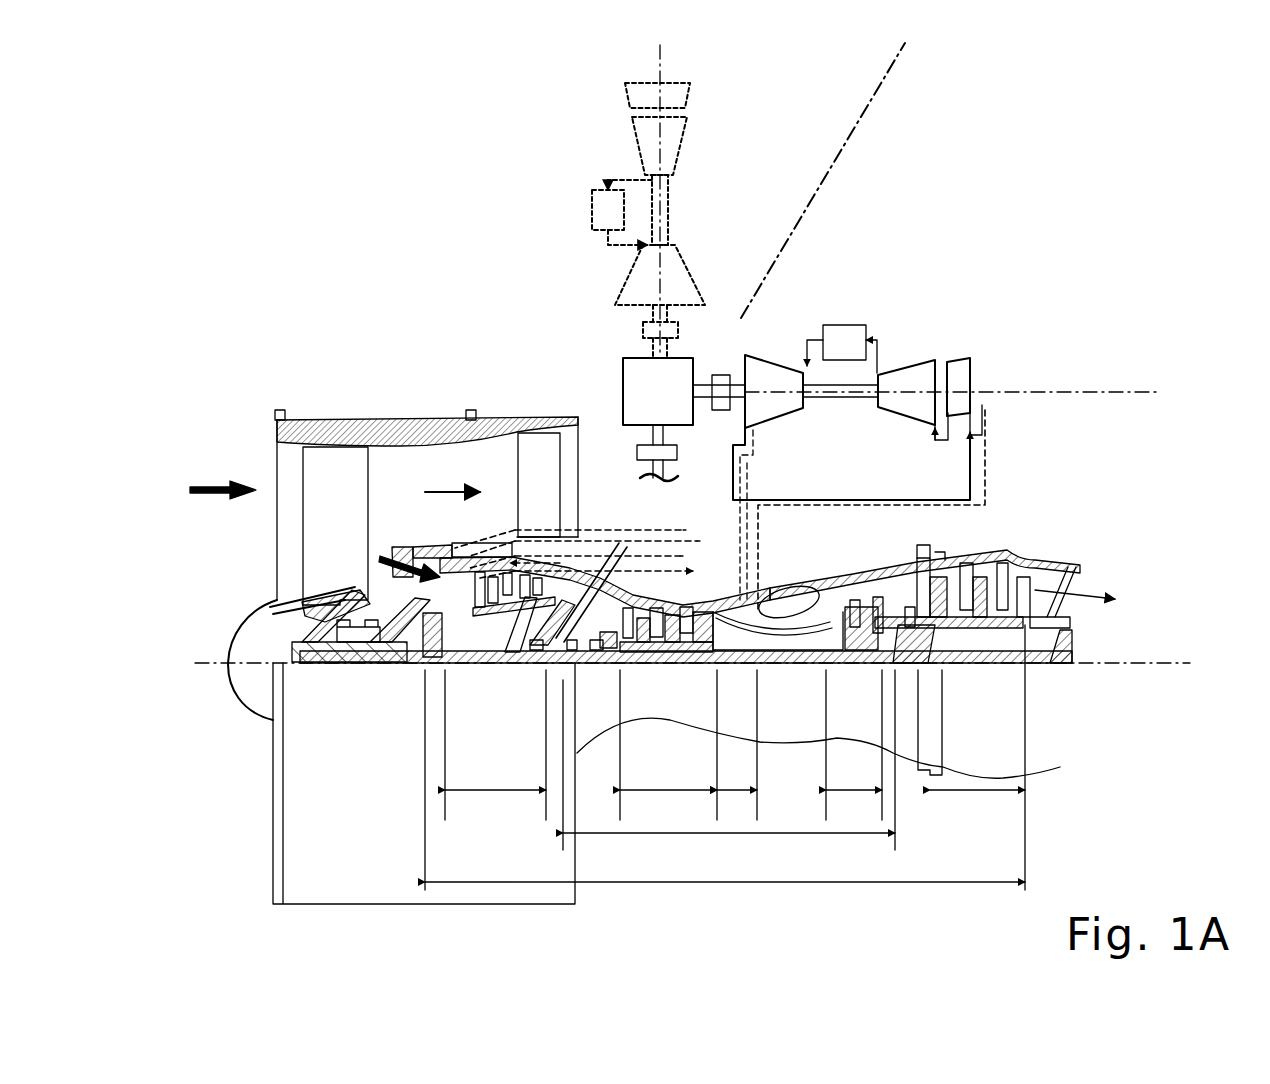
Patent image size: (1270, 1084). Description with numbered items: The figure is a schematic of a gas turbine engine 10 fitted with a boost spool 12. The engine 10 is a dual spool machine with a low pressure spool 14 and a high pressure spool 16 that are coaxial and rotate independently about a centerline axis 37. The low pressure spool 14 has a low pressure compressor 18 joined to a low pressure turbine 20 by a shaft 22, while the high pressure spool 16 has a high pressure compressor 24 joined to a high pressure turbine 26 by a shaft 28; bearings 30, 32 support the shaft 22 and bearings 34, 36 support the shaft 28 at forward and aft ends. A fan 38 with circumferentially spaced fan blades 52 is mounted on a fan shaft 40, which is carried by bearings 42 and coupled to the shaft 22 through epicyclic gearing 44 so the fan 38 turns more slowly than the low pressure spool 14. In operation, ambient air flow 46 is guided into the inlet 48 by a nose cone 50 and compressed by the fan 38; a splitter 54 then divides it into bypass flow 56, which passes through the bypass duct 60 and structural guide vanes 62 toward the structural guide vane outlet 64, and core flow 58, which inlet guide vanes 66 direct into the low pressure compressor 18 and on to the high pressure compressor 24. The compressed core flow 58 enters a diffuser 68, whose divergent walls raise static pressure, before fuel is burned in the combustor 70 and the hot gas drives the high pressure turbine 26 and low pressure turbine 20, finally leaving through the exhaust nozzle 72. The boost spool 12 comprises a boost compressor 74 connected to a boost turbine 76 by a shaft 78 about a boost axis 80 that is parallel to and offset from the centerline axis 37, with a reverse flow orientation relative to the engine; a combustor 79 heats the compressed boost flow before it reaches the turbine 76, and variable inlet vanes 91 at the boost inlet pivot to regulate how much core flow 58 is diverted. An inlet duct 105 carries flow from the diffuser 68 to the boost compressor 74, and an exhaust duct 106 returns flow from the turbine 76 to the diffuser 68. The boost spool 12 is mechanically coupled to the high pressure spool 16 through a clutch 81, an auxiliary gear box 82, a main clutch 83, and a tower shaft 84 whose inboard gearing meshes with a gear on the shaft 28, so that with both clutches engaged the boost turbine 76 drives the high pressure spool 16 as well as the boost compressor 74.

The gas turbine engine 10 is at (352, 908).
The boost spool 12 is at (996, 297).
The low pressure spool 14 is at (649, 769).
The high pressure spool 16 is at (686, 756).
The low pressure compressor 18 is at (495, 745).
The low pressure turbine 20 is at (971, 745).
The shaft 22 is at (495, 650).
The high pressure compressor 24 is at (668, 745).
The high pressure turbine 26 is at (854, 745).
The shaft 28 is at (770, 640).
The bearing 30 is at (540, 660).
The bearing 32 is at (947, 628).
The bearing 34 is at (588, 668).
The bearing 36 is at (890, 665).
The centerline axis 37 is at (1152, 666).
The fan 38 is at (298, 466).
The fan shaft 40 is at (288, 648).
The bearings 42 is at (372, 646).
The gearing 44 is at (403, 684).
The ambient air flow 46 is at (198, 482).
The inlet 48 is at (277, 533).
The nose cone 50 is at (232, 657).
The fan blades 52 is at (335, 526).
The splitter 54 is at (403, 548).
The bypass flow 56 is at (448, 490).
The core flow 58 is at (393, 575).
The bypass duct 60 is at (395, 468).
The structural guide vanes 62 is at (539, 485).
The structural guide vane outlet 64 is at (580, 417).
The inlet guide vanes 66 is at (380, 568).
The diffuser 68 is at (728, 603).
The combustor 70 is at (812, 598).
The exhaust nozzle 72 is at (1080, 565).
The boost compressor 74 is at (905, 360).
The boost turbine 76 is at (768, 360).
The shaft 78 is at (852, 400).
The combustor 79 is at (845, 325).
The boost axis 80 is at (660, 125).
The clutch 81 is at (720, 356).
The auxiliary gear box 82 is at (658, 391).
The main clutch 83 is at (678, 446).
The tower shaft 84 is at (678, 474).
The variable inlet vanes 91 is at (972, 365).
The inlet duct 105 is at (657, 573).
The exhaust duct 106 is at (757, 443).